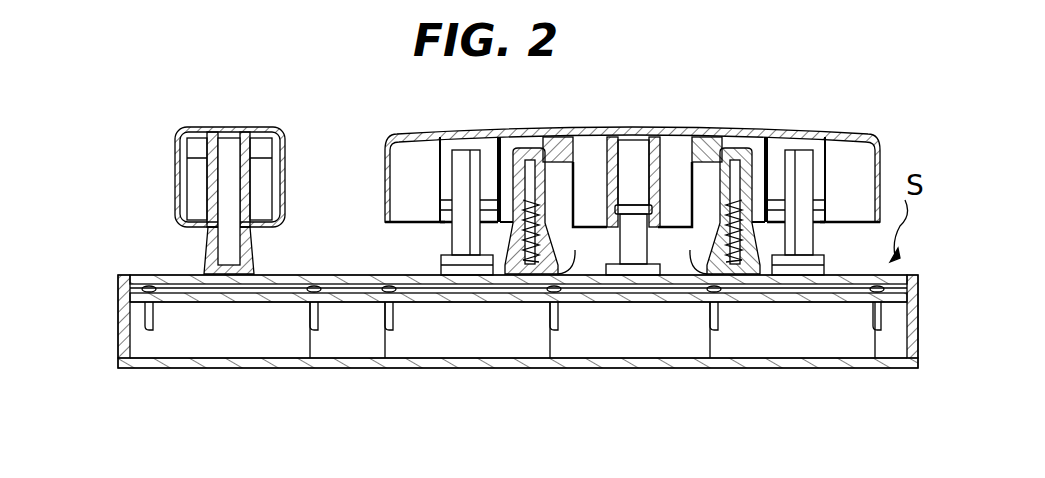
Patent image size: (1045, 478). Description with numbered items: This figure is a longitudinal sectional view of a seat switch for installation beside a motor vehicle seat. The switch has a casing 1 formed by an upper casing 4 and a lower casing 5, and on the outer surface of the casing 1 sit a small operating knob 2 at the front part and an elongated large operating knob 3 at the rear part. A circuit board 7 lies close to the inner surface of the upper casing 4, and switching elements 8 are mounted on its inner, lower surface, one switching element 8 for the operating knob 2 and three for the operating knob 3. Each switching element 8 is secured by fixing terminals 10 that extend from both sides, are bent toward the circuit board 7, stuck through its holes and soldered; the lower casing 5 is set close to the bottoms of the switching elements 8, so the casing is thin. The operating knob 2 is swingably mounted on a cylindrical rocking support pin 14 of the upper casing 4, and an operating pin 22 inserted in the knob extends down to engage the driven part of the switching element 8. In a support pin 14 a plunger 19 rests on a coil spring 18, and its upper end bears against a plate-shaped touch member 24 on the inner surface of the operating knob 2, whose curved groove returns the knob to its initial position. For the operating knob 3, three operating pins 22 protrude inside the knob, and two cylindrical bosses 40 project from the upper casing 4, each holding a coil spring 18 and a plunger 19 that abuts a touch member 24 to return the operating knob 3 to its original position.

The casing 1 is at (82, 268).
The small operating knob 2 is at (228, 128).
The elongated large operating knob 3 is at (652, 135).
The upper casing 4 is at (120, 270).
The lower casing 5 is at (128, 376).
The circuit board 7 is at (357, 301).
The switching element 8 is at (252, 346).
The fixing terminal 10 is at (318, 332).
The rocking support pin 14 is at (253, 263).
The coil spring 18 is at (538, 280).
The plunger 19 is at (525, 150).
The operating pin 22 is at (458, 152).
The touch member 24 is at (560, 140).
The cylindrical boss 40 is at (575, 256).